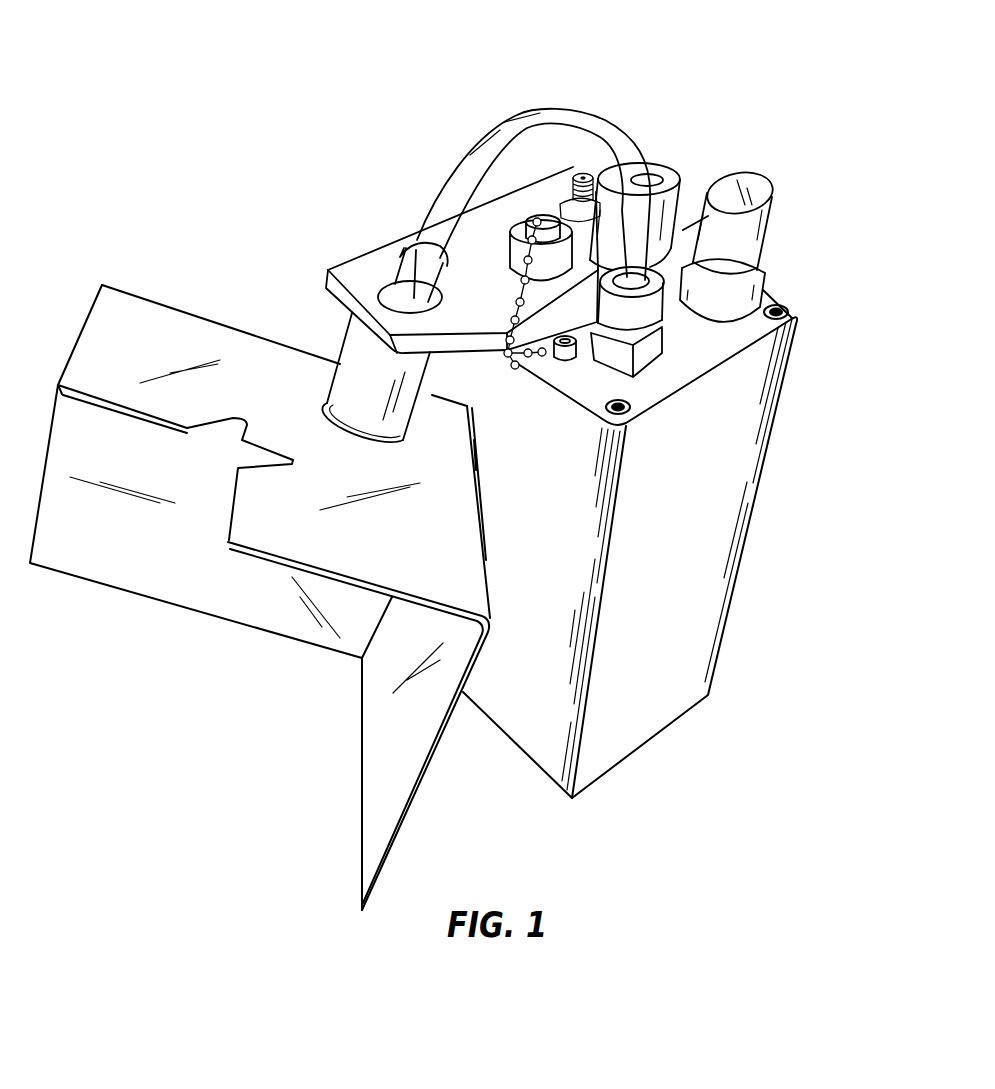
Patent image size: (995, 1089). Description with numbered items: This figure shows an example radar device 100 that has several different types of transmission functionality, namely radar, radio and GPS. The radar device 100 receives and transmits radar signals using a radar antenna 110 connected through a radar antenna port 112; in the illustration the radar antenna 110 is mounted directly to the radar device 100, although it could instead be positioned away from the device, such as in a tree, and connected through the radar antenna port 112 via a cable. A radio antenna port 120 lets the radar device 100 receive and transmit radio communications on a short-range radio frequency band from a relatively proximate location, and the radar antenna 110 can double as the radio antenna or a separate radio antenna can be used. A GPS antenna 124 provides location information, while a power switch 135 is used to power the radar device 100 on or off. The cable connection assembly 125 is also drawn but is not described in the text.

The radar device 100 is at (217, 86).
The radar antenna 110 is at (137, 310).
The radar antenna port 112 is at (650, 323).
The radio antenna port 120 is at (582, 176).
The GPS antenna 124 is at (758, 190).
The cable assembly 125 is at (518, 125).
The power switch 135 is at (650, 165).